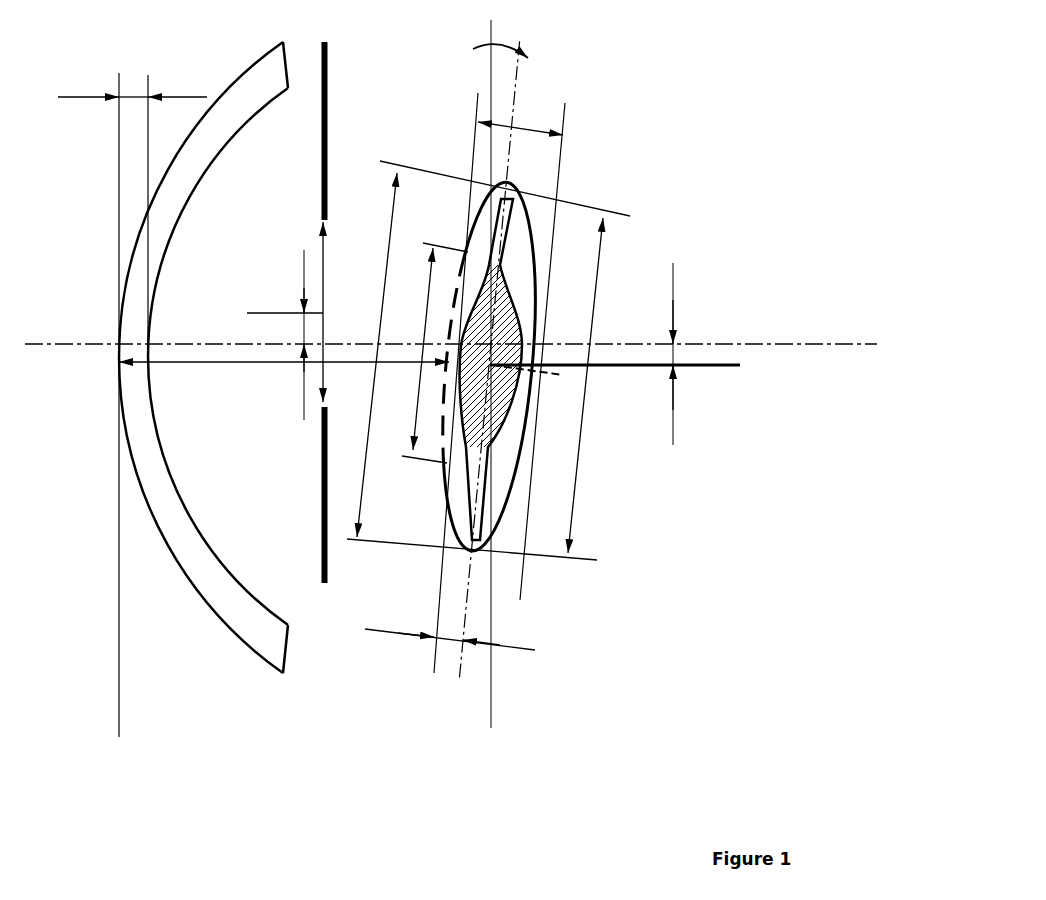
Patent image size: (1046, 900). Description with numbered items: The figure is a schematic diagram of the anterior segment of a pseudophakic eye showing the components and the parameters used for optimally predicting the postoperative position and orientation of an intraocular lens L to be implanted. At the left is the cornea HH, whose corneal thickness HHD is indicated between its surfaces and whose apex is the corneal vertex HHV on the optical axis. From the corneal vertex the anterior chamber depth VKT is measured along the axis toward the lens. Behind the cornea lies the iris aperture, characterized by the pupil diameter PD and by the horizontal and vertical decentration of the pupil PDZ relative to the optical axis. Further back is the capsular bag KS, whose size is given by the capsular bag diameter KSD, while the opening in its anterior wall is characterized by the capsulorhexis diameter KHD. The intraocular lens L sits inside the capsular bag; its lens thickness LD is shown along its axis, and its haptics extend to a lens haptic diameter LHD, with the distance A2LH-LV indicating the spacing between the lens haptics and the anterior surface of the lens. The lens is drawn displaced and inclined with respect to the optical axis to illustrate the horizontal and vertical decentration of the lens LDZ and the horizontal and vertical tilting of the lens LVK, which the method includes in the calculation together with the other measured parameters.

The cornea HH is at (207, 602).
The corneal vertex HHV is at (113, 342).
The corneal thickness HHD is at (127, 83).
The pupil diameter PD is at (322, 258).
The horizontal and vertical decentration of the pupil PDZ is at (302, 330).
The anterior chamber depth VKT is at (284, 381).
The capsular bag KS is at (523, 192).
The capsular bag diameter KSD is at (488, 360).
The capsulorhexis diameter KHD is at (434, 353).
The intraocular lens L is at (503, 400).
The lens thickness LD is at (528, 118).
The horizontal and vertical tilting of the lens LVK is at (503, 65).
The horizontal and vertical decentration of the lens LDZ is at (697, 348).
The lens haptic diameter LHD is at (570, 385).
The distance between the lens haptic and the anterior surface of the lens A2LH-LV is at (447, 652).